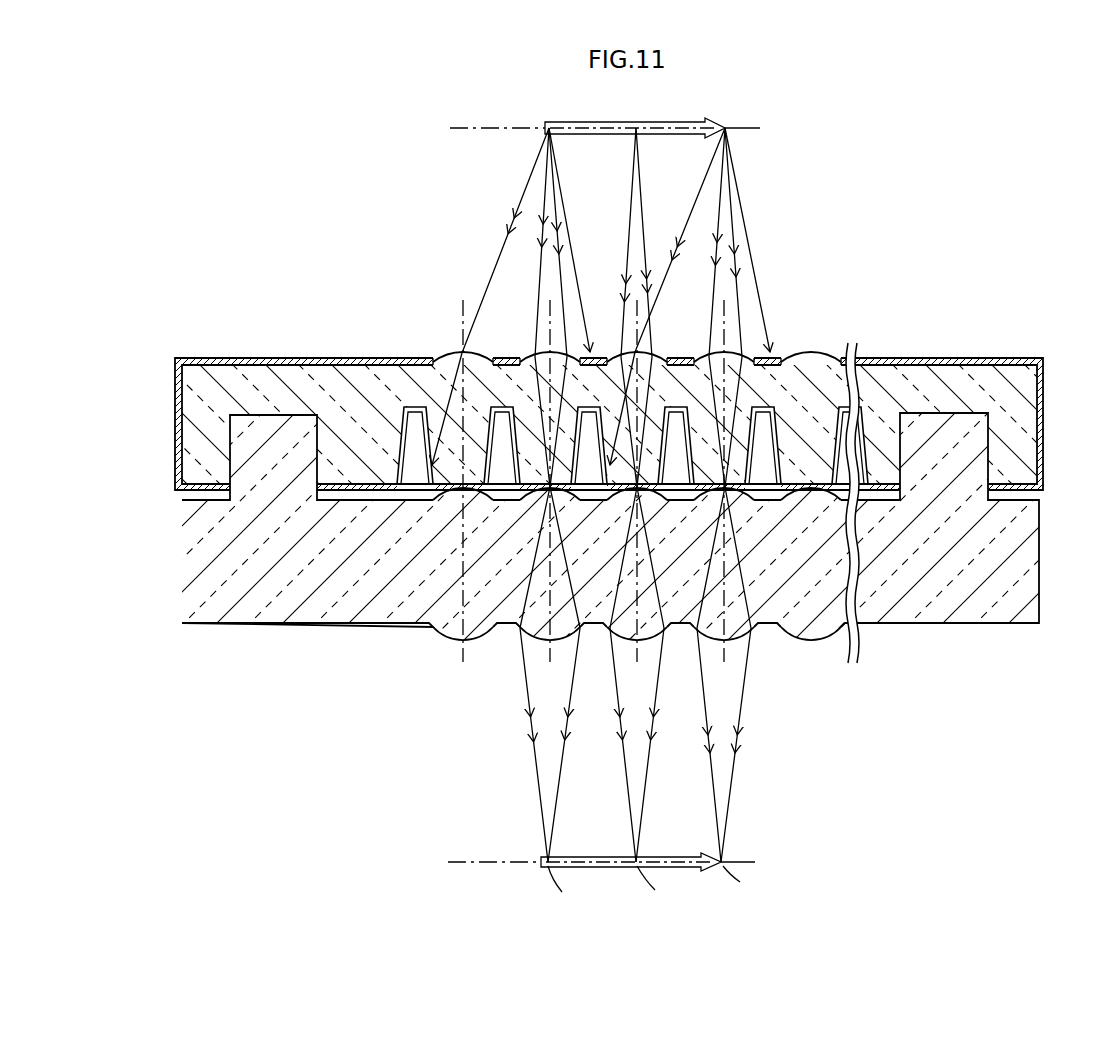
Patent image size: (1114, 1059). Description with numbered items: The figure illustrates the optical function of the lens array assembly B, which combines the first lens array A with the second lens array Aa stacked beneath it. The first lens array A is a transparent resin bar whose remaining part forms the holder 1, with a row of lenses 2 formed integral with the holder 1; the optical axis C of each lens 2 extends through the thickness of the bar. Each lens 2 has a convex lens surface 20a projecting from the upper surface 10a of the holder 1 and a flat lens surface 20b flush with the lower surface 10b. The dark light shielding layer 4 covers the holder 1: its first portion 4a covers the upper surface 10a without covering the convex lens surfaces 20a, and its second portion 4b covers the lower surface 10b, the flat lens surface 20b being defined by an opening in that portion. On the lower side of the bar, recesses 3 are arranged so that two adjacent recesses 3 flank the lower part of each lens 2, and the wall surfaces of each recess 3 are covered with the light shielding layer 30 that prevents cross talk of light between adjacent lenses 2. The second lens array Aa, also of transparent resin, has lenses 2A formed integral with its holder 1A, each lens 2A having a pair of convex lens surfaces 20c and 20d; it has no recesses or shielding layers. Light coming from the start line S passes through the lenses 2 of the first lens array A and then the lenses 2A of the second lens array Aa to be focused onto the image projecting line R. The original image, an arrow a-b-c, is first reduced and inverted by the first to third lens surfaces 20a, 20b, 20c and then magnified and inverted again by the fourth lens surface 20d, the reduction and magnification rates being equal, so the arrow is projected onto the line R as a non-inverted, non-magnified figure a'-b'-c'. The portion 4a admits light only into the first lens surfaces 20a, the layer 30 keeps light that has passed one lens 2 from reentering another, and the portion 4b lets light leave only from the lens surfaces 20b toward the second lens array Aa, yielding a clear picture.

The holder 1 is at (884, 379).
The holder 1A is at (884, 592).
The lens 2 is at (610, 299).
The lens 2A is at (624, 669).
The recess 3 is at (609, 474).
The light shielding layer 30 is at (408, 437).
The light shielding layer 4 is at (573, 428).
The first portion 4a is at (290, 358).
The second portion 4b is at (392, 490).
The upper surface 10a is at (433, 361).
The lower surface 10b is at (360, 497).
The convex lens surface 20a is at (525, 357).
The flat lens surface 20b is at (637, 533).
The convex lens surface 20c is at (637, 533).
The convex lens surface 20d is at (522, 647).
The lens array A is at (628, 381).
The lens array Aa is at (995, 628).
The lens array assembly B is at (640, 582).
The start line S is at (455, 133).
The image projecting line R is at (470, 868).
The optical axis C is at (440, 298).